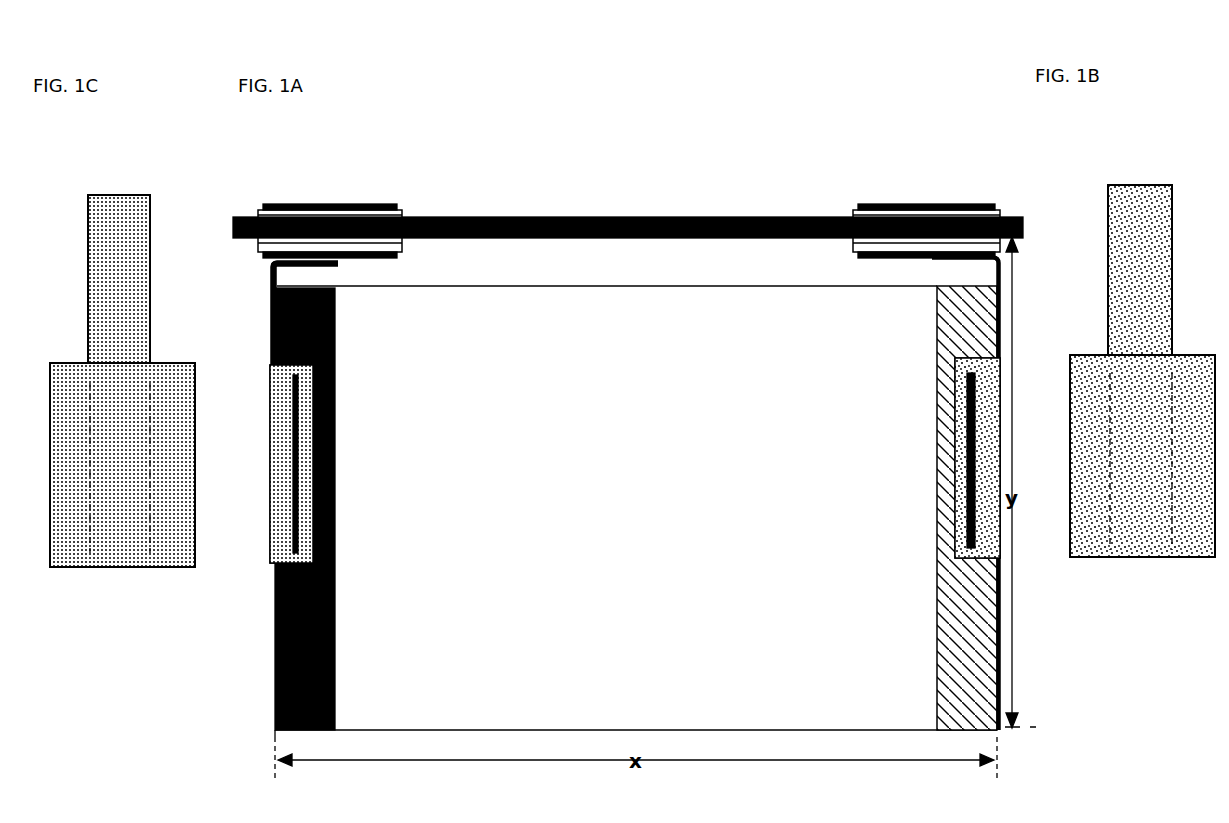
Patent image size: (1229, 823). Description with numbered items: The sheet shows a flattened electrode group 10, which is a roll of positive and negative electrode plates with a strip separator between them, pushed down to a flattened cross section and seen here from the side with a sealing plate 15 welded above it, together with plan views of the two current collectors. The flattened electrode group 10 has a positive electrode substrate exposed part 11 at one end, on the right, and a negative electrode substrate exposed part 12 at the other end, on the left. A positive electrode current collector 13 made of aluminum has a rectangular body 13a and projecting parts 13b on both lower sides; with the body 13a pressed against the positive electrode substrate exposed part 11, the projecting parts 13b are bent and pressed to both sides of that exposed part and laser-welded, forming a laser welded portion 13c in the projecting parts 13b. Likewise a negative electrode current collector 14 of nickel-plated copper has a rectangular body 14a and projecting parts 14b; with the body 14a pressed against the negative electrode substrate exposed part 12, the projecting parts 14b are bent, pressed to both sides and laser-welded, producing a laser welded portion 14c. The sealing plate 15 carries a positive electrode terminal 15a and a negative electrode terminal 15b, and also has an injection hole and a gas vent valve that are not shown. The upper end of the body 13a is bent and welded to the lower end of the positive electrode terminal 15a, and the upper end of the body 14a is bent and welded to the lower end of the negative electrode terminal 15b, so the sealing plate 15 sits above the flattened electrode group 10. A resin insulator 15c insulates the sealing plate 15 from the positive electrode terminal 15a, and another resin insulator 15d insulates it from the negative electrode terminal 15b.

In FIG. 1A, the flattened electrode group 10 is at (238, 666).
In FIG. 1A, the positive electrode substrate exposed part 11 is at (965, 633).
In FIG. 1A, the negative electrode substrate exposed part 12 is at (285, 663).
In FIG. 1A, the positive electrode current collector 13 is at (1009, 539).
In FIG. 1B, the positive electrode current collector 13 is at (1138, 178).
In FIG. 1A, the rectangular body 13a is at (1000, 300).
In FIG. 1B, the rectangular body 13a is at (1127, 285).
In FIG. 1B, the projecting parts 13b is at (1195, 533).
In FIG. 1A, the laser welded portion 13c is at (977, 422).
In FIG. 1A, the negative electrode current collector 14 is at (258, 542).
In FIG. 1C, the negative electrode current collector 14 is at (113, 184).
In FIG. 1A, the rectangular body 14a is at (270, 305).
In FIG. 1C, the rectangular body 14a is at (133, 323).
In FIG. 1C, the projecting parts 14b is at (173, 537).
In FIG. 1A, the laser welded portion 14c is at (298, 470).
In FIG. 1A, the sealing plate 15 is at (597, 218).
In FIG. 1A, the positive electrode terminal 15a is at (885, 250).
In FIG. 1A, the negative electrode terminal 15b is at (313, 250).
In FIG. 1A, the resin insulator 15c is at (868, 243).
In FIG. 1A, the resin insulator 15d is at (392, 247).